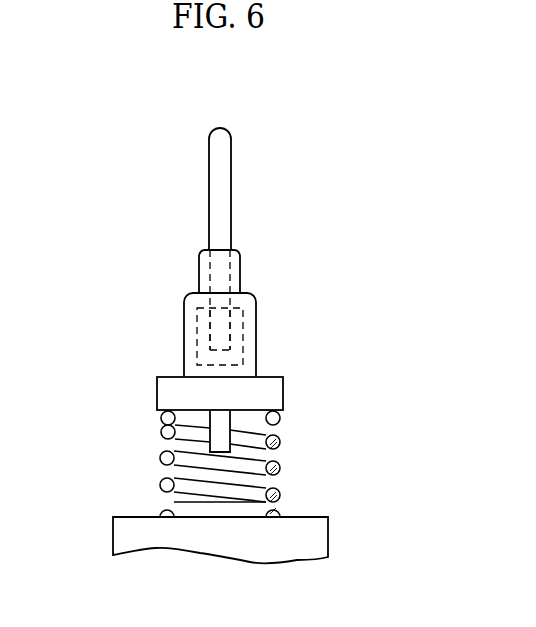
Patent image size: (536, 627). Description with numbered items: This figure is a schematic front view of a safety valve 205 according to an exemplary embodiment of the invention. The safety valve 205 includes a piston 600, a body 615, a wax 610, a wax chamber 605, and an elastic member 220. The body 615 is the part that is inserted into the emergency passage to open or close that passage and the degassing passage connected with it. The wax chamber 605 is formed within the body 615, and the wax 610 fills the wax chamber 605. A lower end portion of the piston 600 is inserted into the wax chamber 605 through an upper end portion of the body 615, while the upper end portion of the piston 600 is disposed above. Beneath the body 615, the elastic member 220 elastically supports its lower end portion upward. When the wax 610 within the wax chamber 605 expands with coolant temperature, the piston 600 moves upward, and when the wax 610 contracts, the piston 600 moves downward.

The safety valve 205 is at (306, 172).
The piston 600 is at (217, 182).
The wax chamber 605 is at (243, 342).
The wax 610 is at (228, 323).
The body 615 is at (184, 327).
The elastic member 220 is at (280, 440).